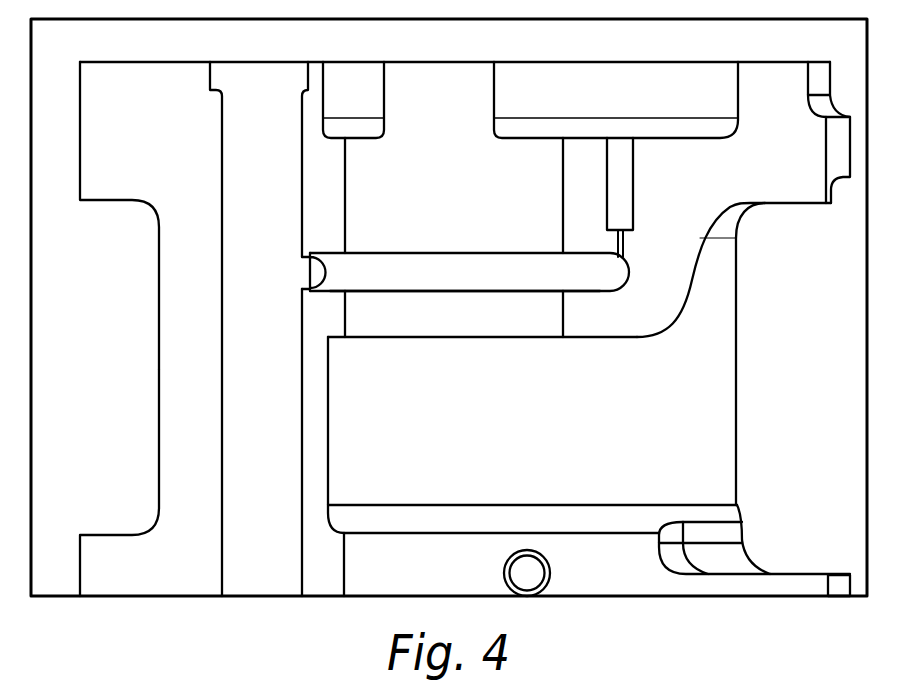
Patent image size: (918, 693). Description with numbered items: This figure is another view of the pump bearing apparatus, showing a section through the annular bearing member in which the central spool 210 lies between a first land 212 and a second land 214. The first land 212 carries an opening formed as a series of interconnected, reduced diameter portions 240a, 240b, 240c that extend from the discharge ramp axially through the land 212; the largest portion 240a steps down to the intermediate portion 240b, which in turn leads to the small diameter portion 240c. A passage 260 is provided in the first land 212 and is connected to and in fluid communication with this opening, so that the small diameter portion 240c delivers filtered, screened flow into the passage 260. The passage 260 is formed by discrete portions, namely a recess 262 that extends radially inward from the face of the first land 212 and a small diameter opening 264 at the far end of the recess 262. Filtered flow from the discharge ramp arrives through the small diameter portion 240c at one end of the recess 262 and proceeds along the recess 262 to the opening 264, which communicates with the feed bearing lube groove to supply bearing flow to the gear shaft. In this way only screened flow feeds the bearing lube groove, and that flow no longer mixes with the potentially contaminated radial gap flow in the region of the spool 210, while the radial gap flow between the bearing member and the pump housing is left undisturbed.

The spool 210 is at (702, 462).
The first land 212 is at (78, 160).
The second land 214 is at (79, 563).
The reduced diameter portion of opening 240a is at (522, 125).
The reduced diameter portion of opening 240b is at (620, 182).
The small diameter portion of opening 240c is at (617, 245).
The passage 260 is at (388, 246).
The recess 262 is at (436, 292).
The small diameter opening 264 is at (307, 274).